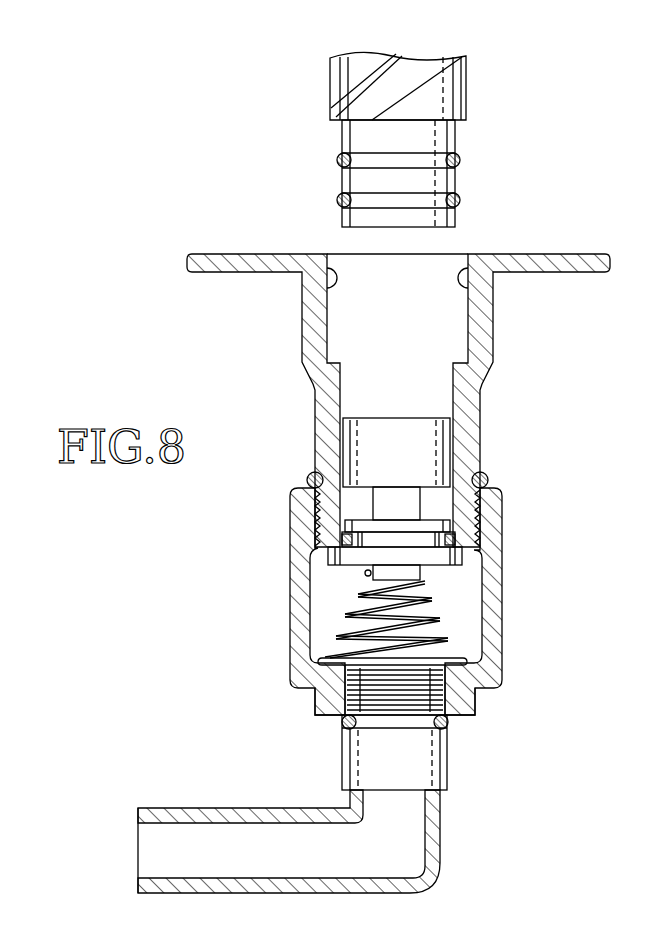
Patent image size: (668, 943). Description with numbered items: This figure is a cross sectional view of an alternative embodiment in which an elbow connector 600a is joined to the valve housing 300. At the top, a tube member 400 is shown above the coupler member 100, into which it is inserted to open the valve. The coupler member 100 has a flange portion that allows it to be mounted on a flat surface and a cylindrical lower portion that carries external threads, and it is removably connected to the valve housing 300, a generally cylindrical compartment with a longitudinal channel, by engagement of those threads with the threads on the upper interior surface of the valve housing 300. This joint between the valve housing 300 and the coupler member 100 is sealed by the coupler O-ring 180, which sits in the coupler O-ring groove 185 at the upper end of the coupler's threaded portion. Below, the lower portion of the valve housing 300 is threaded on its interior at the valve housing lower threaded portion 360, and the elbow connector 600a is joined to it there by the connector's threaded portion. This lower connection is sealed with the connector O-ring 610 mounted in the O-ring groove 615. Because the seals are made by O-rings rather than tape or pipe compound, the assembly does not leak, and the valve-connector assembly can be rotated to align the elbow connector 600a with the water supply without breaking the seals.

The tube member 400 is at (466, 97).
The coupler member 100 is at (493, 318).
The coupler body groove 185 is at (470, 463).
The coupler body O-ring 180 is at (489, 478).
The valve housing 300 is at (502, 589).
The valve housing lower threaded portion 360 is at (330, 697).
The connector O-ring 610 is at (449, 722).
The O-ring groove 615 is at (447, 745).
The elbow connector 600a is at (440, 838).